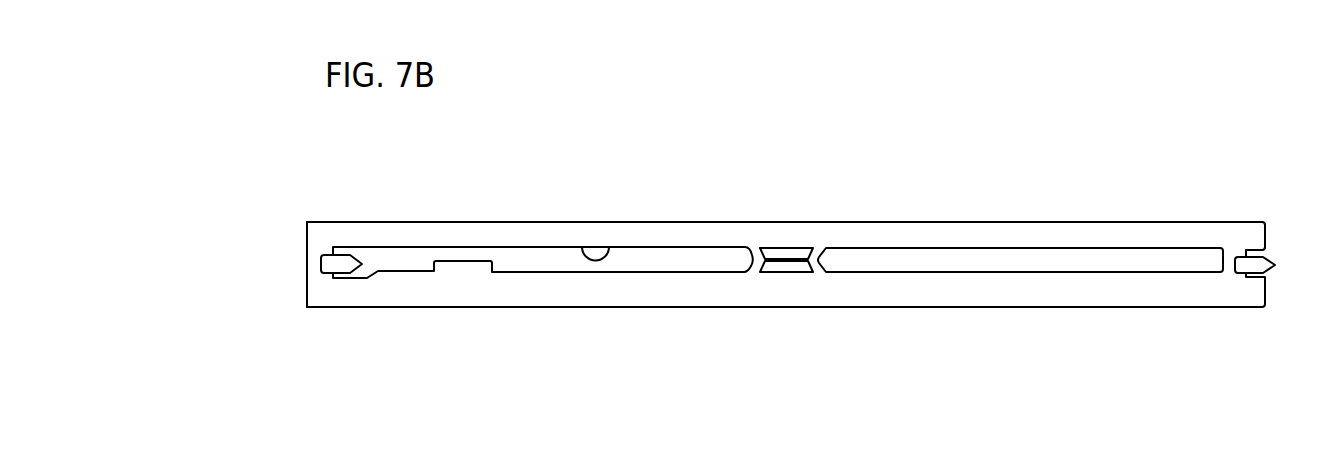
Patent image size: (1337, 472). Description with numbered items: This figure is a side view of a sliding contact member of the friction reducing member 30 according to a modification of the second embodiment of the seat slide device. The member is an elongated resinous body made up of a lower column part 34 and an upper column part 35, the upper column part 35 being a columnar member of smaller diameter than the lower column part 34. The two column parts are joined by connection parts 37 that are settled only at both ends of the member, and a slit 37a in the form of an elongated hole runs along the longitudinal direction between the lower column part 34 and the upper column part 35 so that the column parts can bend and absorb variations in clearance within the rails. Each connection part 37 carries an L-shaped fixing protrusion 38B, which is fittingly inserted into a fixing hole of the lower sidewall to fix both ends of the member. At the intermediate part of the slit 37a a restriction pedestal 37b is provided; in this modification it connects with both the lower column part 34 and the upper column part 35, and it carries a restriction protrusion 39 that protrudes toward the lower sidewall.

The friction reducing member 30 is at (1133, 157).
The lower column part 34 is at (903, 288).
The upper column part 35 is at (882, 233).
The connection part 37 is at (316, 268).
The slit 37a is at (612, 248).
The restriction pedestal 37b is at (742, 258).
The fixing protrusion 38B is at (343, 263).
The restriction protrusion 39 is at (790, 265).